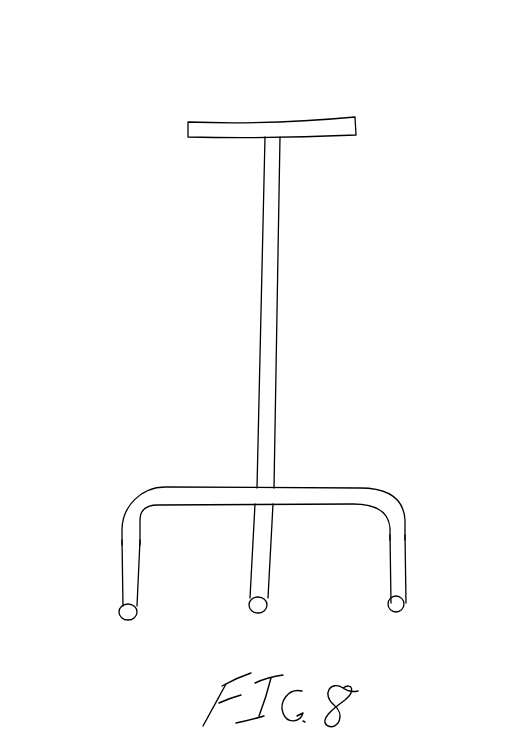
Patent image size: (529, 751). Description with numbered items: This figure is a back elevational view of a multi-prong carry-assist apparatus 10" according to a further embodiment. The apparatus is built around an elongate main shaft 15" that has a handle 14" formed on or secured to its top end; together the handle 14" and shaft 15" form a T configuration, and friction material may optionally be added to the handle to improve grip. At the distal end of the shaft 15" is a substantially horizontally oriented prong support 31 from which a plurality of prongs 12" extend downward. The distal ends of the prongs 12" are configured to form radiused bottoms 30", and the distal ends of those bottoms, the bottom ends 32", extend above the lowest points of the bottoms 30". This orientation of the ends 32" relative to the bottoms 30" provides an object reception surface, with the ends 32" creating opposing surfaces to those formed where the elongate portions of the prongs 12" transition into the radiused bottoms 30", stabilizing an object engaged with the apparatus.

The multi-prong carry-assist apparatus 10 is at (328, 327).
The prong 12 is at (125, 532).
The handle 14 is at (302, 120).
The elongate main shaft 15 is at (281, 241).
The radiused bottom 30 is at (73, 648).
The prong support 31 is at (320, 487).
The bottom end 32 is at (517, 620).